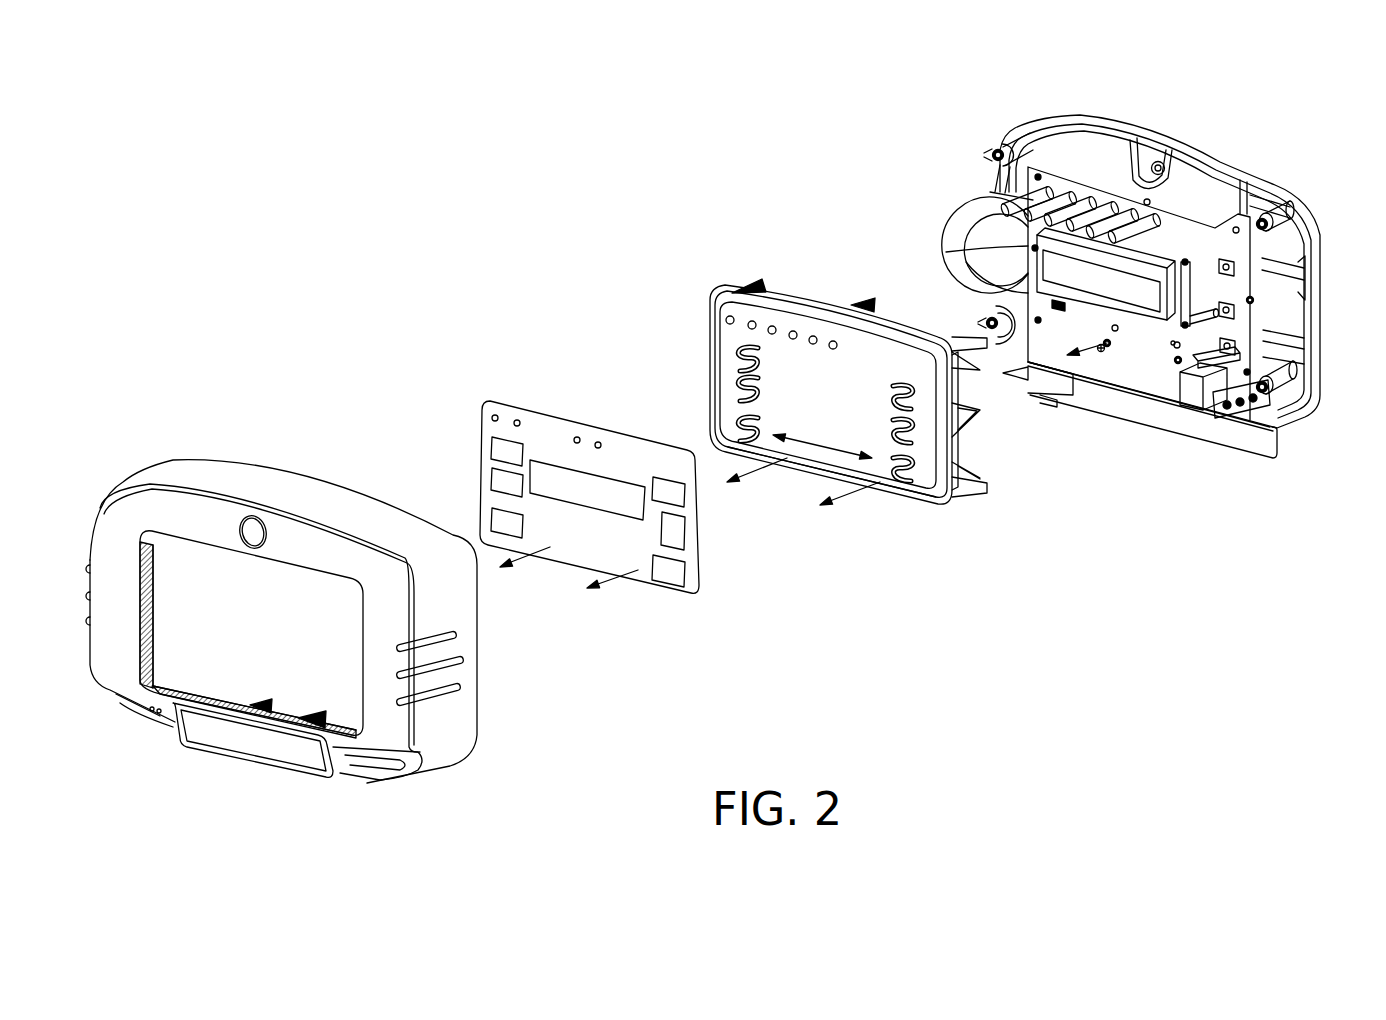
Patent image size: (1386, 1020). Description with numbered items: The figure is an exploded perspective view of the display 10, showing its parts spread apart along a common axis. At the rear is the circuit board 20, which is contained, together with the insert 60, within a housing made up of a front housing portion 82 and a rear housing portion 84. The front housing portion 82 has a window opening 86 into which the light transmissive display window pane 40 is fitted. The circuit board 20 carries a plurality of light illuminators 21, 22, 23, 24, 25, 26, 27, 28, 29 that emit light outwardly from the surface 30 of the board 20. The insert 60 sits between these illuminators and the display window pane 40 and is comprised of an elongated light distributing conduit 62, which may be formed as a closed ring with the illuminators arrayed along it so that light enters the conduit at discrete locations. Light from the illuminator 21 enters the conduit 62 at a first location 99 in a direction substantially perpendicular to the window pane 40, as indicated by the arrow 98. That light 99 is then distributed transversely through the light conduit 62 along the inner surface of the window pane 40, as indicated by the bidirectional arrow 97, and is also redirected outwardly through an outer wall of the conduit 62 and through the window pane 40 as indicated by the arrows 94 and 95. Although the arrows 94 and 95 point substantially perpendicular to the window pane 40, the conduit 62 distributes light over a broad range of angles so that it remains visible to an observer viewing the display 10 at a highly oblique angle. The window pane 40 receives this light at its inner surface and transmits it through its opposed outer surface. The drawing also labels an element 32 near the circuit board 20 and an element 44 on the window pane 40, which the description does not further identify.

The display 10 is at (1272, 88).
The circuit board 20 is at (1192, 217).
The illuminator 21 is at (1099, 353).
The light illuminator 22 is at (1174, 366).
The light illuminator 23 is at (1285, 375).
The light illuminator 24 is at (1256, 302).
The light illuminator 25 is at (1246, 210).
The light illuminator 26 is at (1140, 194).
The light illuminator 27 is at (997, 150).
The light illuminator 28 is at (982, 262).
The light illuminator 29 is at (987, 321).
The surface of the circuit board 30 is at (1145, 372).
The speaker housing 32 is at (972, 228).
The light transmissive display window pane 40 is at (557, 407).
The display window 44 is at (627, 430).
The insert 60 is at (852, 297).
The elongated light distributing conduit 62 is at (905, 508).
The front housing portion 82 is at (336, 500).
The rear housing portion 84 is at (1305, 279).
The window opening 86 is at (198, 540).
The arrow 94 is at (548, 548).
The arrow 95 is at (633, 572).
The bidirectional arrow 97 is at (824, 441).
The arrow 98 is at (1078, 372).
The first location 99 is at (810, 483).